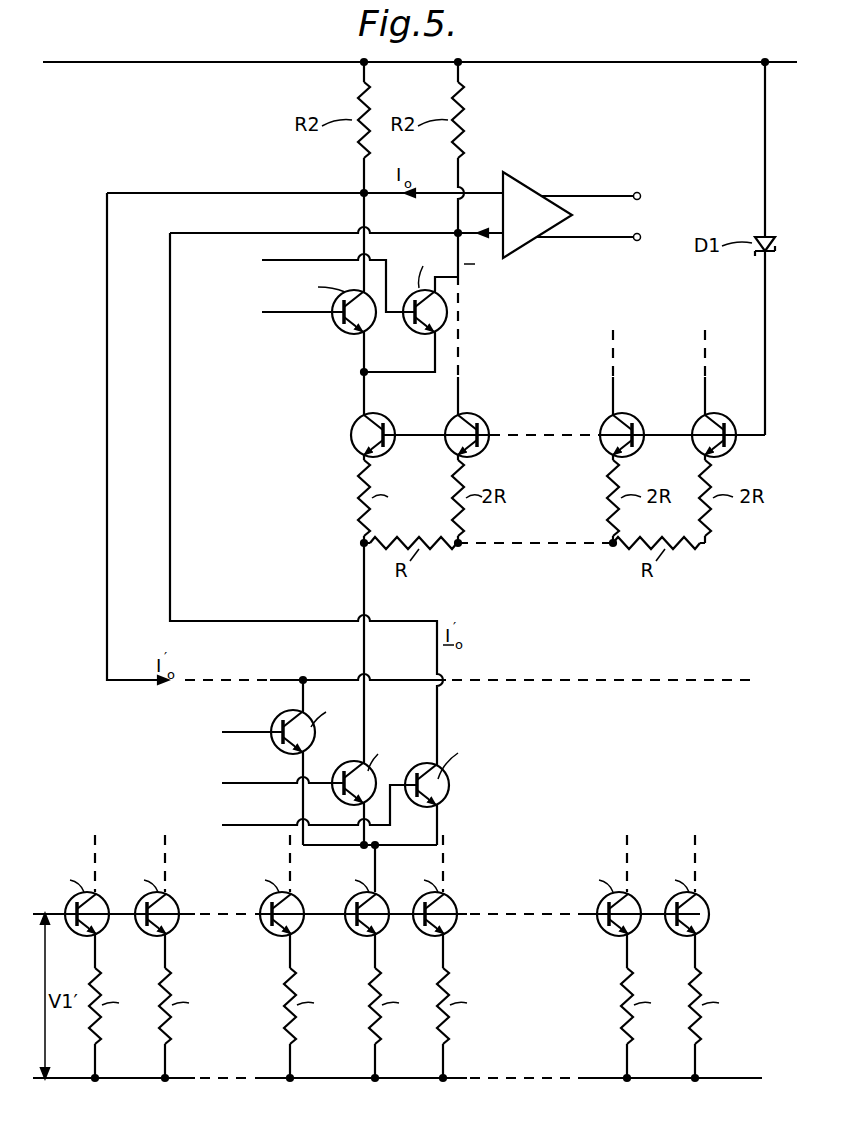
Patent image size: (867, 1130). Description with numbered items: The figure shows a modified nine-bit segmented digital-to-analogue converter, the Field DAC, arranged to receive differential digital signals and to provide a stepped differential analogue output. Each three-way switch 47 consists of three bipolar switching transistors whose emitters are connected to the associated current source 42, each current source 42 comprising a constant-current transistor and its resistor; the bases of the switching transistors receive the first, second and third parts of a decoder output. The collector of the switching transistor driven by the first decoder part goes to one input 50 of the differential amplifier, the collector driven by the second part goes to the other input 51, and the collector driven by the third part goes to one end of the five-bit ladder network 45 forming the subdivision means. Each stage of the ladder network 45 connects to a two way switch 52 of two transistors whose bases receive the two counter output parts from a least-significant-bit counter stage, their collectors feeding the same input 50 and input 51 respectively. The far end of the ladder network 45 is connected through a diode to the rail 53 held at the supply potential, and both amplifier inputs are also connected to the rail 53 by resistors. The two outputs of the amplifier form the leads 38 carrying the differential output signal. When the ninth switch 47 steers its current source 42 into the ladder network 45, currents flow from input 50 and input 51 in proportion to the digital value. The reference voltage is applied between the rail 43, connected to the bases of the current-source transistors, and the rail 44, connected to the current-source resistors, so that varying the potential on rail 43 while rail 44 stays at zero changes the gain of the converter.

The rail 53 is at (686, 64).
The one input of differential amplifier 50 is at (490, 192).
The other input of differential amplifier 51 is at (468, 232).
The leads 38 is at (591, 192).
The two way switch 52 is at (343, 345).
The R-2R ladder network 45 is at (340, 489).
The three-way switch 47 is at (467, 800).
The rail 43 is at (250, 916).
The current source 42 is at (184, 1033).
The rail 44 is at (258, 1077).